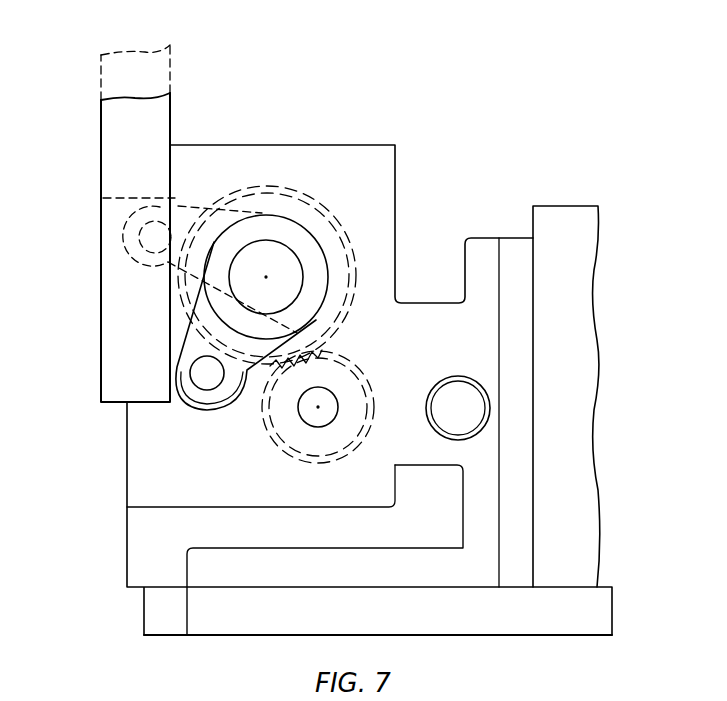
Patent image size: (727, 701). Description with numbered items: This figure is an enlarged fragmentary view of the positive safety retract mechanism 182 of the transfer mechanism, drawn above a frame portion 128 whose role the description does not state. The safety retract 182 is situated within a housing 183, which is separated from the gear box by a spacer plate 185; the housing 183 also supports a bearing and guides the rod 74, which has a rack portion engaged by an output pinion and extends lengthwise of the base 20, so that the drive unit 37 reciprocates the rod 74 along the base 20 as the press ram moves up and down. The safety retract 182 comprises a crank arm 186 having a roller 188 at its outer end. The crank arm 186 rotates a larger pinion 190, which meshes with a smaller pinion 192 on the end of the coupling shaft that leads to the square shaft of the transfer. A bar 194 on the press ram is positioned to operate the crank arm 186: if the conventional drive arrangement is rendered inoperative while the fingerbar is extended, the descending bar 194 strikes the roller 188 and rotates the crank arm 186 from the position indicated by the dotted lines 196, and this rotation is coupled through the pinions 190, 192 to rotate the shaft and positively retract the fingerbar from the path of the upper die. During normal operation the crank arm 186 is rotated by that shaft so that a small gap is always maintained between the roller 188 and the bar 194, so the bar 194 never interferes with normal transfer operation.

The base 20 is at (567, 625).
The drive unit 37 is at (556, 192).
The rod 74 is at (452, 392).
The frame 128 is at (369, 551).
The positive safety retract mechanism 182 is at (381, 127).
The housing 183 is at (385, 228).
The spacer plate 185 is at (511, 250).
The crank arm 186 is at (249, 372).
The roller 188 is at (206, 408).
The larger pinion 190 is at (322, 220).
The smaller pinion 192 is at (302, 437).
The bar 194 is at (117, 302).
The dotted lines 196 is at (200, 210).